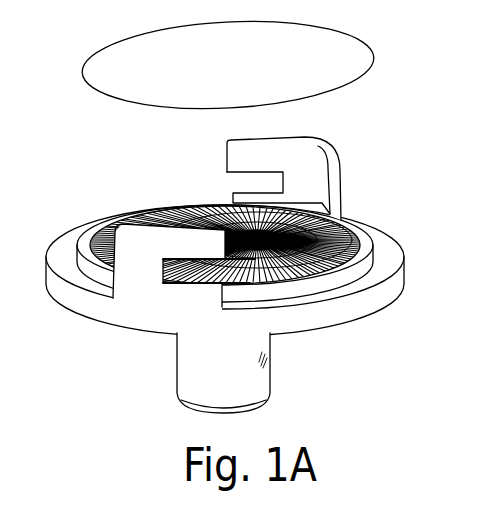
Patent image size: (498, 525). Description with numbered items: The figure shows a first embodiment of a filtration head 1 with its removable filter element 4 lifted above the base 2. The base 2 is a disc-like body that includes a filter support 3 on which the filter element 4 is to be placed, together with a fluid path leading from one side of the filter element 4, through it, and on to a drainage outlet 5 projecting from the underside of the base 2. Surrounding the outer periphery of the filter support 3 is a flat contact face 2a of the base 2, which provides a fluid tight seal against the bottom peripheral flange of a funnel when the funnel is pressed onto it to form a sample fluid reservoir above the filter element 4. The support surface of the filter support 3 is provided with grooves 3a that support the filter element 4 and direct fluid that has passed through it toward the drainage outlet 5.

The filtration head 1 is at (331, 356).
The base 2 is at (365, 296).
The contact face 2a is at (67, 248).
The filter support 3 is at (345, 226).
The grooves 3a is at (287, 212).
The filter element 4 is at (279, 62).
The drainage outlet 5 is at (204, 380).